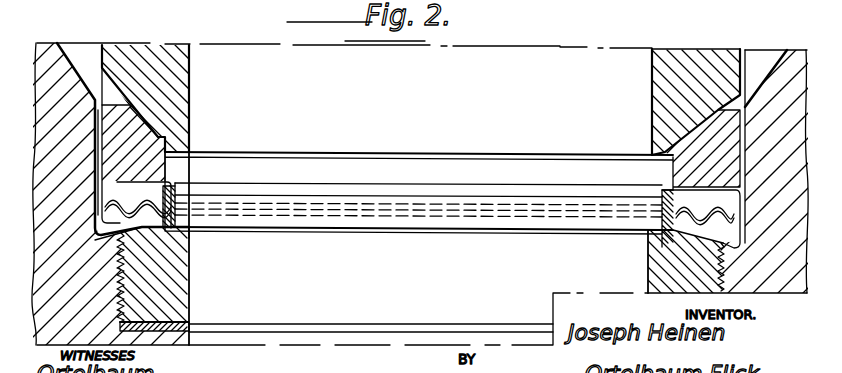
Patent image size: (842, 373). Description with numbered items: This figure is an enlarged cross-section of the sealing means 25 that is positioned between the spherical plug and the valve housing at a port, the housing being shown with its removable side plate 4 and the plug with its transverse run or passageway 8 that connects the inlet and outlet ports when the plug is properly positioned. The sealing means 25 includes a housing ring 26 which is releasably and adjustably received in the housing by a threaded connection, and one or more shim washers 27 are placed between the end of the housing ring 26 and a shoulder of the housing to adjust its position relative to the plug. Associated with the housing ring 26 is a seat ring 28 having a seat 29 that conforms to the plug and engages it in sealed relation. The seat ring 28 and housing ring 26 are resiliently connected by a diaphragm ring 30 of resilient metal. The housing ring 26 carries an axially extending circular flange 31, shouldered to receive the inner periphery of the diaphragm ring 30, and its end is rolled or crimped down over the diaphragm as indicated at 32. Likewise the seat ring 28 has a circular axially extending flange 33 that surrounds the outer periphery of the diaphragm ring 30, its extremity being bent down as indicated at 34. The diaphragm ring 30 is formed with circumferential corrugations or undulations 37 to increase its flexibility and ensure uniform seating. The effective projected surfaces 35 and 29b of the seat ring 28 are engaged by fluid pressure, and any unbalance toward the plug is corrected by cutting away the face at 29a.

The removable side plate 4 is at (50, 63).
The transverse run or passageway 8 is at (612, 80).
The sealing means 25 is at (125, 272).
The housing ring 26 is at (178, 278).
The shim washer 27 is at (115, 327).
The seat ring 28 is at (130, 127).
The seat 29 is at (160, 95).
The cut-away portion of face 29a is at (153, 133).
The effective projected surface 29b is at (97, 103).
The diaphragm ring 30 is at (96, 222).
The axially extending circular flange 31 is at (188, 238).
The rolled-down end of flange 32 is at (168, 181).
The circular axially extending flange 33 is at (98, 185).
The bent-down extremity of flange 34 is at (110, 205).
The effective projected surface 35 is at (173, 152).
The corrugations or undulations 37 is at (118, 237).